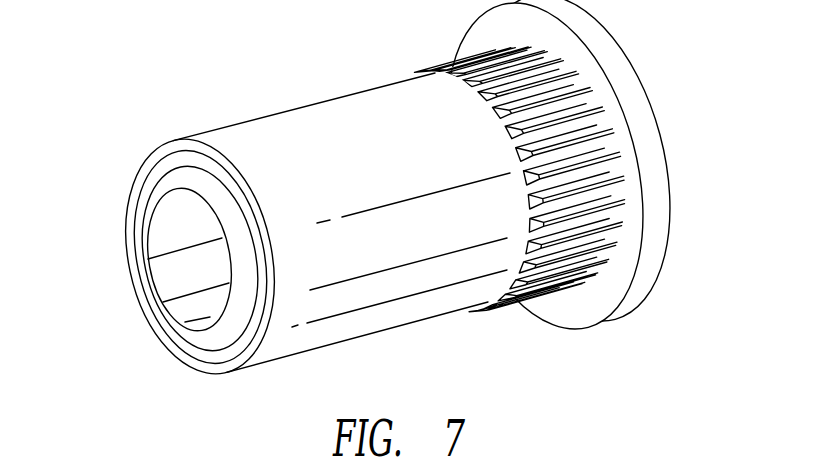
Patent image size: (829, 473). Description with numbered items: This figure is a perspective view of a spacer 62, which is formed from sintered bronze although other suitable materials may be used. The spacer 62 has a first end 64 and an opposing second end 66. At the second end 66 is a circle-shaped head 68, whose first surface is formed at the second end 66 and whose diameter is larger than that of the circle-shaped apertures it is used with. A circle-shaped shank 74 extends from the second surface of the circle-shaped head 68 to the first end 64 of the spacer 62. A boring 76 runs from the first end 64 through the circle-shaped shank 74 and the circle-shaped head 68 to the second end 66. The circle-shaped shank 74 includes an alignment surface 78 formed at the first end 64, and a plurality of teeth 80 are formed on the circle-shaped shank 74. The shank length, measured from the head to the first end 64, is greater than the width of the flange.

The spacer 62 is at (385, 194).
The first end 64 is at (137, 286).
The second end 66 is at (663, 148).
The circle-shaped head 68 is at (625, 95).
The circle-shaped shank 74 is at (375, 202).
The boring 76 is at (180, 272).
The alignment surface 78 is at (150, 184).
The teeth 80 is at (545, 270).